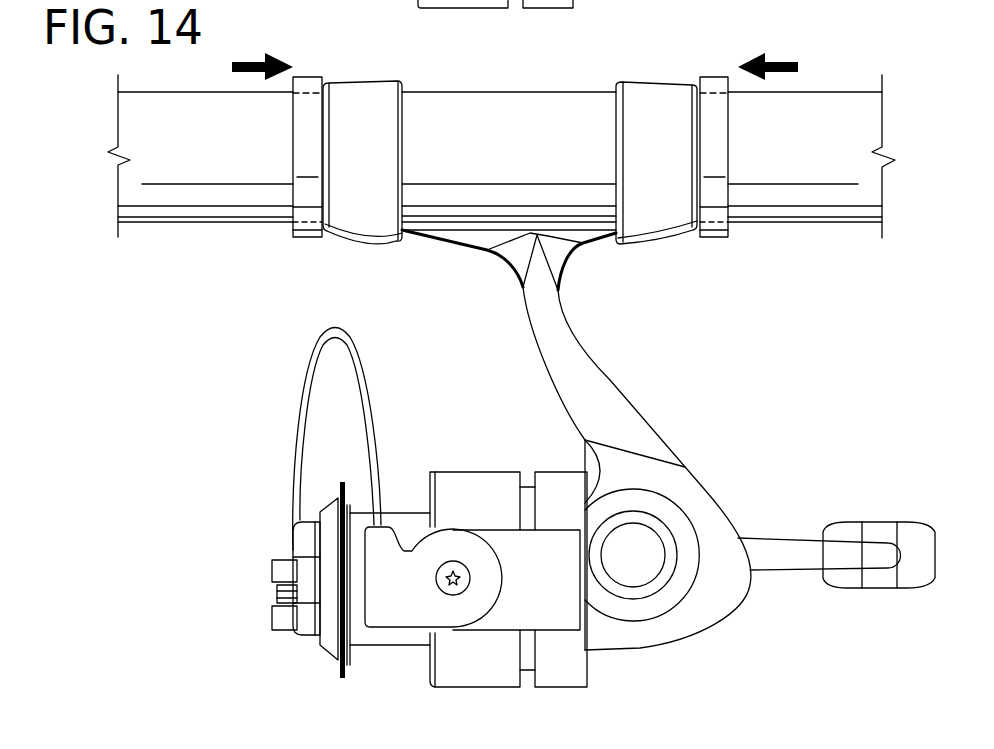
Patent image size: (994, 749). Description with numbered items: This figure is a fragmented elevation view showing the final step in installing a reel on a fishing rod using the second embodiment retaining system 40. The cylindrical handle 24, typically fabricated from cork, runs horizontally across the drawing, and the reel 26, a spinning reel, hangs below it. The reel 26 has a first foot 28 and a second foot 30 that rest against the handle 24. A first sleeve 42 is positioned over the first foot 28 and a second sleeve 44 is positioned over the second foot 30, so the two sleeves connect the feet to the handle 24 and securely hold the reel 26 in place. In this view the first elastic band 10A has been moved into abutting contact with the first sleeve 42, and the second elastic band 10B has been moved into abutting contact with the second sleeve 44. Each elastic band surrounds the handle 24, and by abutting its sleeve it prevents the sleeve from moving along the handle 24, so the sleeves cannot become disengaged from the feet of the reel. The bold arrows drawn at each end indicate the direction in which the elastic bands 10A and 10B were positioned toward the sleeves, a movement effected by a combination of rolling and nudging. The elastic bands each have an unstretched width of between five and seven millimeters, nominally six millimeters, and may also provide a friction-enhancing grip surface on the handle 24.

The first elastic band 10A is at (717, 77).
The second elastic band 10B is at (308, 77).
The handle 24 is at (450, 92).
The reel 26 is at (705, 488).
The first foot 28 is at (595, 241).
The second foot 30 is at (428, 237).
The retaining system 40 is at (680, 68).
The first sleeve 42 is at (622, 78).
The second sleeve 44 is at (362, 80).